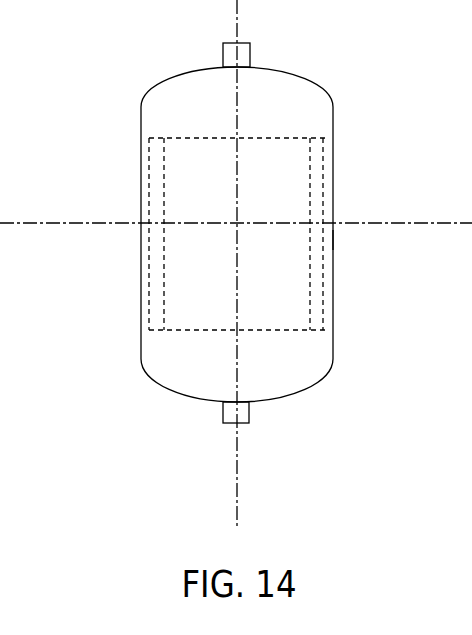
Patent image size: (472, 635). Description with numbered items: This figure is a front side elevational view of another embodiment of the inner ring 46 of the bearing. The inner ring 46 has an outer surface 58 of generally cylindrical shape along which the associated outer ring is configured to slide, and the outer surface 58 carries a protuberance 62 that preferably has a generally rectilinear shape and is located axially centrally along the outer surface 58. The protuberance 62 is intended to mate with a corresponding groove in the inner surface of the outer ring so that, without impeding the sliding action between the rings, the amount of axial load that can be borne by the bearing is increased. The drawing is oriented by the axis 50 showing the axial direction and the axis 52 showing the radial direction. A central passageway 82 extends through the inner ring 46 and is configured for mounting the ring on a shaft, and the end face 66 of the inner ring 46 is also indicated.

The inner ring 46 is at (320, 100).
The axis 50 is at (58, 230).
The axis 52 is at (245, 478).
The outer surface 58 is at (293, 78).
The protuberance 62 is at (223, 58).
The end face 66 is at (150, 135).
The central passageway 82 is at (337, 240).